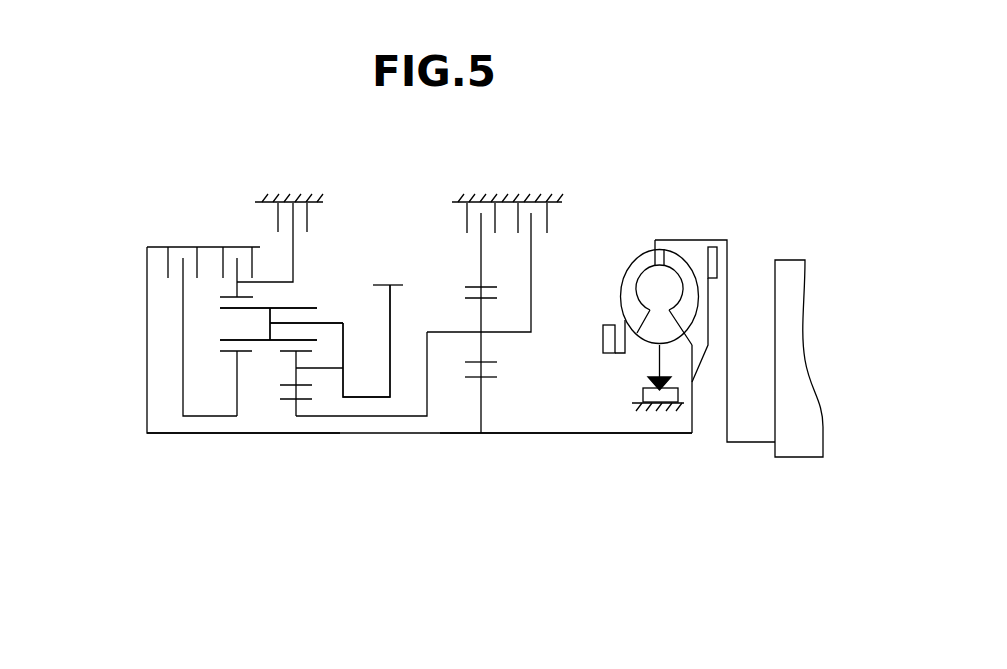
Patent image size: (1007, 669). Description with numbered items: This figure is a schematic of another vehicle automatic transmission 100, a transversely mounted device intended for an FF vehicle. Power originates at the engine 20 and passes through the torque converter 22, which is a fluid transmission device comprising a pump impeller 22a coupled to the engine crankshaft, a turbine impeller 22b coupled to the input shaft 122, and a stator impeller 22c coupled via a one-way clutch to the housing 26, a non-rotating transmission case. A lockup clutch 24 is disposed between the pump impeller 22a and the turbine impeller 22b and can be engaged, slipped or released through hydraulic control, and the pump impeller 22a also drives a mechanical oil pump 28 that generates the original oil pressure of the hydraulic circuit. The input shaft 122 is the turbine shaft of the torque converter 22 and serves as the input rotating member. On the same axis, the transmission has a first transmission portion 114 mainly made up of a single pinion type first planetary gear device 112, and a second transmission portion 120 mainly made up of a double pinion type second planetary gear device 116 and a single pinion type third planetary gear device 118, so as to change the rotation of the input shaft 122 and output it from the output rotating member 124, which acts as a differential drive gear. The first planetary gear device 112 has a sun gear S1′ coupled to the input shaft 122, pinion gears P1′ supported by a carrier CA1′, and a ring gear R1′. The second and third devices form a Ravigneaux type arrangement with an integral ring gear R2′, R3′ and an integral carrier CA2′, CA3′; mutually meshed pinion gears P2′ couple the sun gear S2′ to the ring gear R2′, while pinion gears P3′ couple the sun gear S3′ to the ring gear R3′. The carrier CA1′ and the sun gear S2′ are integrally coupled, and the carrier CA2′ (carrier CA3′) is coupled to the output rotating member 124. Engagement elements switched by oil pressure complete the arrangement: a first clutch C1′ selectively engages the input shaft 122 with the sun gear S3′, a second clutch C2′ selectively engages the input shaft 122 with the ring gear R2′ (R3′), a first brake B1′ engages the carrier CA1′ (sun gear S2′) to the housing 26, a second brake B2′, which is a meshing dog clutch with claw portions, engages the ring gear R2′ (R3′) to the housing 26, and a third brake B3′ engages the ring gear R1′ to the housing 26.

The vehicle automatic transmission 100 is at (598, 120).
The second transmission portion 120 is at (183, 453).
The third planetary gear device 118 is at (240, 442).
The second planetary gear device 116 is at (300, 448).
The first planetary gear device 112 is at (481, 450).
The first transmission portion 114 is at (556, 450).
The input shaft 122 is at (642, 435).
The output rotating member 124 is at (385, 285).
The housing 26 is at (502, 200).
The torque converter 22 is at (662, 215).
The pump impeller 22a is at (630, 270).
The turbine impeller 22b is at (690, 303).
The stator impeller 22c is at (647, 340).
The lockup clutch 24 is at (724, 284).
The mechanical oil pump 28 is at (612, 323).
The engine 20 is at (792, 270).
The first clutch C1′ is at (202, 319).
The second clutch C2′ is at (256, 250).
The first brake B1′ is at (550, 218).
The second brake B2′ is at (298, 213).
The third brake B3′ is at (461, 218).
The ring gear R1′ is at (475, 287).
The ring gear R2′ is at (233, 294).
The ring gear R3′ is at (268, 324).
The pinion gears P1′ is at (478, 362).
The pinion gears P2′ is at (288, 308).
The pinion gears P3′ is at (306, 324).
The carrier CA1′ is at (500, 333).
The carrier CA2′ is at (330, 322).
The carrier CA3′ is at (366, 341).
The sun gear S1′ is at (488, 378).
The sun gear S2′ is at (295, 398).
The sun gear S3′ is at (230, 353).